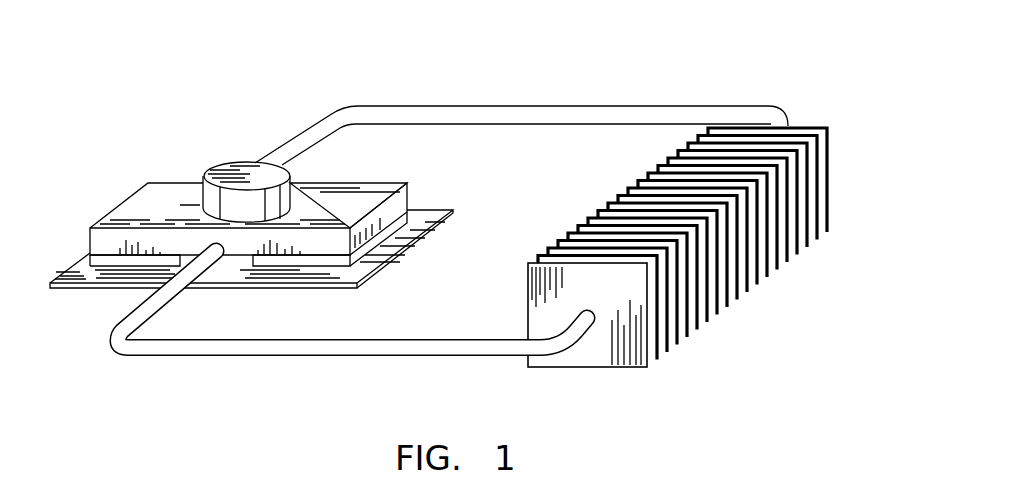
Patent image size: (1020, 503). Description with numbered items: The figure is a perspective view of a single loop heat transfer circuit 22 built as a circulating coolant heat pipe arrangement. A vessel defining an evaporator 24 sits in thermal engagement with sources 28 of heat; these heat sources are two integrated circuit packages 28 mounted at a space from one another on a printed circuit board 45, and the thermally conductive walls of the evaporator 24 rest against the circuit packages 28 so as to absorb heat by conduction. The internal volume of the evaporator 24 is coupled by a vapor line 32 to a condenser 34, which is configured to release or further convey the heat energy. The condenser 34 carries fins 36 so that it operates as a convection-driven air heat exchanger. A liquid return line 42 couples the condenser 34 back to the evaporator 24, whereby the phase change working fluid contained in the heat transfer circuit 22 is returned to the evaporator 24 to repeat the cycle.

The heat transfer circuit 22 is at (334, 60).
The evaporator 24 is at (137, 205).
The heat sources 28 is at (112, 260).
The vapor line 32 is at (433, 106).
The condenser 34 is at (602, 355).
The fins 36 is at (763, 282).
The liquid return line 42 is at (270, 358).
The printed circuit board 45 is at (295, 274).